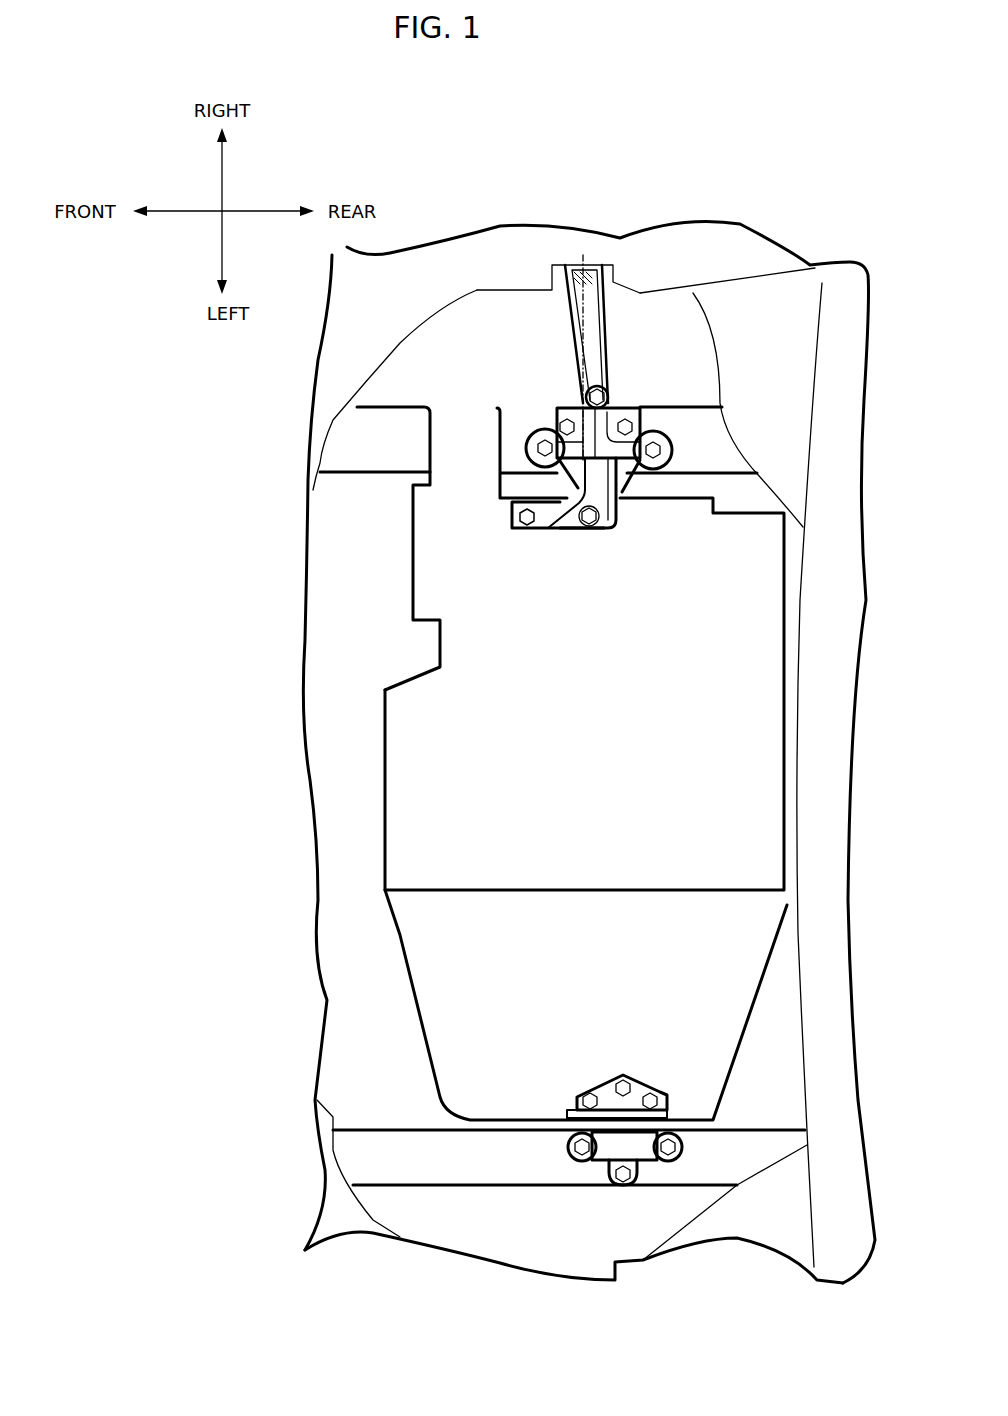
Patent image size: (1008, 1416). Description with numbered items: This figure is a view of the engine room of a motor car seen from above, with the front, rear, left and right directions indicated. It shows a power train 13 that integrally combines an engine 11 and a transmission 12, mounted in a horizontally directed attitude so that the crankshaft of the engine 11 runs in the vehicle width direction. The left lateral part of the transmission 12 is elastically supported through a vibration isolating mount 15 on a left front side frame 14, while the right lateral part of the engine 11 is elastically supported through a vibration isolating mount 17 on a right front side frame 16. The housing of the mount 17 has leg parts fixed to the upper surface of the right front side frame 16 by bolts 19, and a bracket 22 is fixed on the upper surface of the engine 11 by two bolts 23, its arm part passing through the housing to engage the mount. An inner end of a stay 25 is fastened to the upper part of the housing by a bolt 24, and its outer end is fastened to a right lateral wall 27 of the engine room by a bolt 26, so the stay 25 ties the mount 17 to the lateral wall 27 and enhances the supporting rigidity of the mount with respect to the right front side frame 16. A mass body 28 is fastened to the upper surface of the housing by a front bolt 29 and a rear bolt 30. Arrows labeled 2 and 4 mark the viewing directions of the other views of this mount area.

The viewing direction arrow (FIG. 2) 2 is at (598, 585).
The viewing direction arrow (FIG. 4) 4 is at (646, 370).
The engine 11 is at (430, 772).
The transmission 12 is at (430, 947).
The power train 13 is at (466, 816).
The left front side frame 14 is at (527, 1173).
The vibration isolating mount 15 is at (598, 1075).
The right front side frame 16 is at (397, 427).
The vibration isolating mount 17 is at (645, 487).
The bolts 19 is at (540, 450).
The bracket 22 is at (565, 520).
The bolts 23 is at (527, 527).
The bolt 24 is at (587, 390).
The stay 25 is at (577, 302).
The bolt 26 is at (597, 300).
The right lateral wall 27 is at (484, 300).
The mass body 28 is at (633, 403).
The front bolt 29 is at (563, 420).
The rear bolt 30 is at (627, 425).